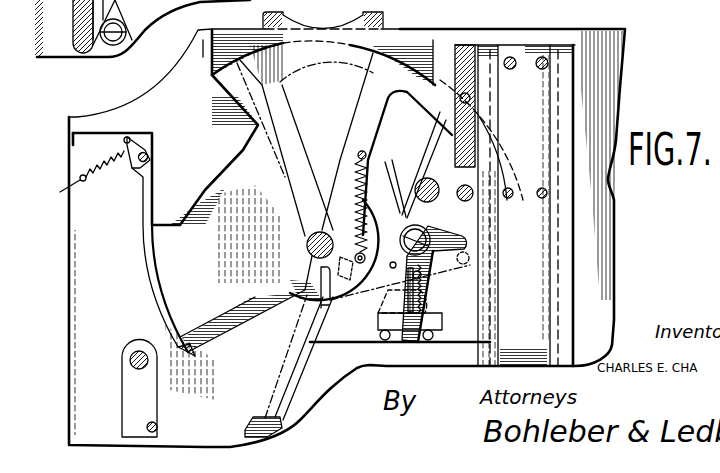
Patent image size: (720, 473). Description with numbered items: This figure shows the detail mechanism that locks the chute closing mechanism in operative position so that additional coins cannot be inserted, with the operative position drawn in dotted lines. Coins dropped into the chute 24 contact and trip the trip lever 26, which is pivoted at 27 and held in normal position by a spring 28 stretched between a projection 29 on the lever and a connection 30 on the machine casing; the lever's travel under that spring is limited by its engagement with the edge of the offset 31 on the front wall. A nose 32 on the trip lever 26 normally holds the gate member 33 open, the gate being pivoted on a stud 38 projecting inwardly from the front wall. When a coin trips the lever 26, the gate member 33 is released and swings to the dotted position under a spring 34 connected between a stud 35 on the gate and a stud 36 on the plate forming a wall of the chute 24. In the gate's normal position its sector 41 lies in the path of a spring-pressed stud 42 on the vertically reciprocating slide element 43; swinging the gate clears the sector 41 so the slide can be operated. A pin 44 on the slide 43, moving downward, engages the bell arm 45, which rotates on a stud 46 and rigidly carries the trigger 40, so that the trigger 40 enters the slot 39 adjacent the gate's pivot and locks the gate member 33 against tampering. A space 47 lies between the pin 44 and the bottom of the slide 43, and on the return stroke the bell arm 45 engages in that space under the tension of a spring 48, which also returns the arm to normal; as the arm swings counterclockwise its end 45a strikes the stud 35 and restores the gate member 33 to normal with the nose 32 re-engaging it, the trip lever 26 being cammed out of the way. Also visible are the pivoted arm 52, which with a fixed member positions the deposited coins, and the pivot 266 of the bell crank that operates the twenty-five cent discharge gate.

The chute 24 is at (324, 14).
The trip lever 26 is at (146, 263).
The pivot 27 is at (136, 160).
The spring 28 is at (97, 157).
The projection 29 is at (130, 139).
The machine casing connection 30 is at (60, 191).
The offset 31 is at (203, 57).
The nose 32 is at (194, 354).
The gate member 33 is at (216, 306).
The spring 34 is at (355, 220).
The stud 35 is at (348, 272).
The stud 36 is at (358, 152).
The stud 38 is at (308, 244).
The slot 39 is at (320, 342).
The trigger 40 is at (377, 318).
The sector 41 is at (446, 88).
The stud 42 is at (469, 96).
The slide element 43 is at (465, 52).
The pin 44 is at (478, 273).
The bell arm 45 is at (448, 232).
The end of bell arm 45a is at (406, 228).
The stud 46 is at (416, 179).
The space 47 is at (478, 238).
The spring 48 is at (423, 288).
The pivoted arm 52 is at (134, 385).
The pivot 266 is at (113, 45).